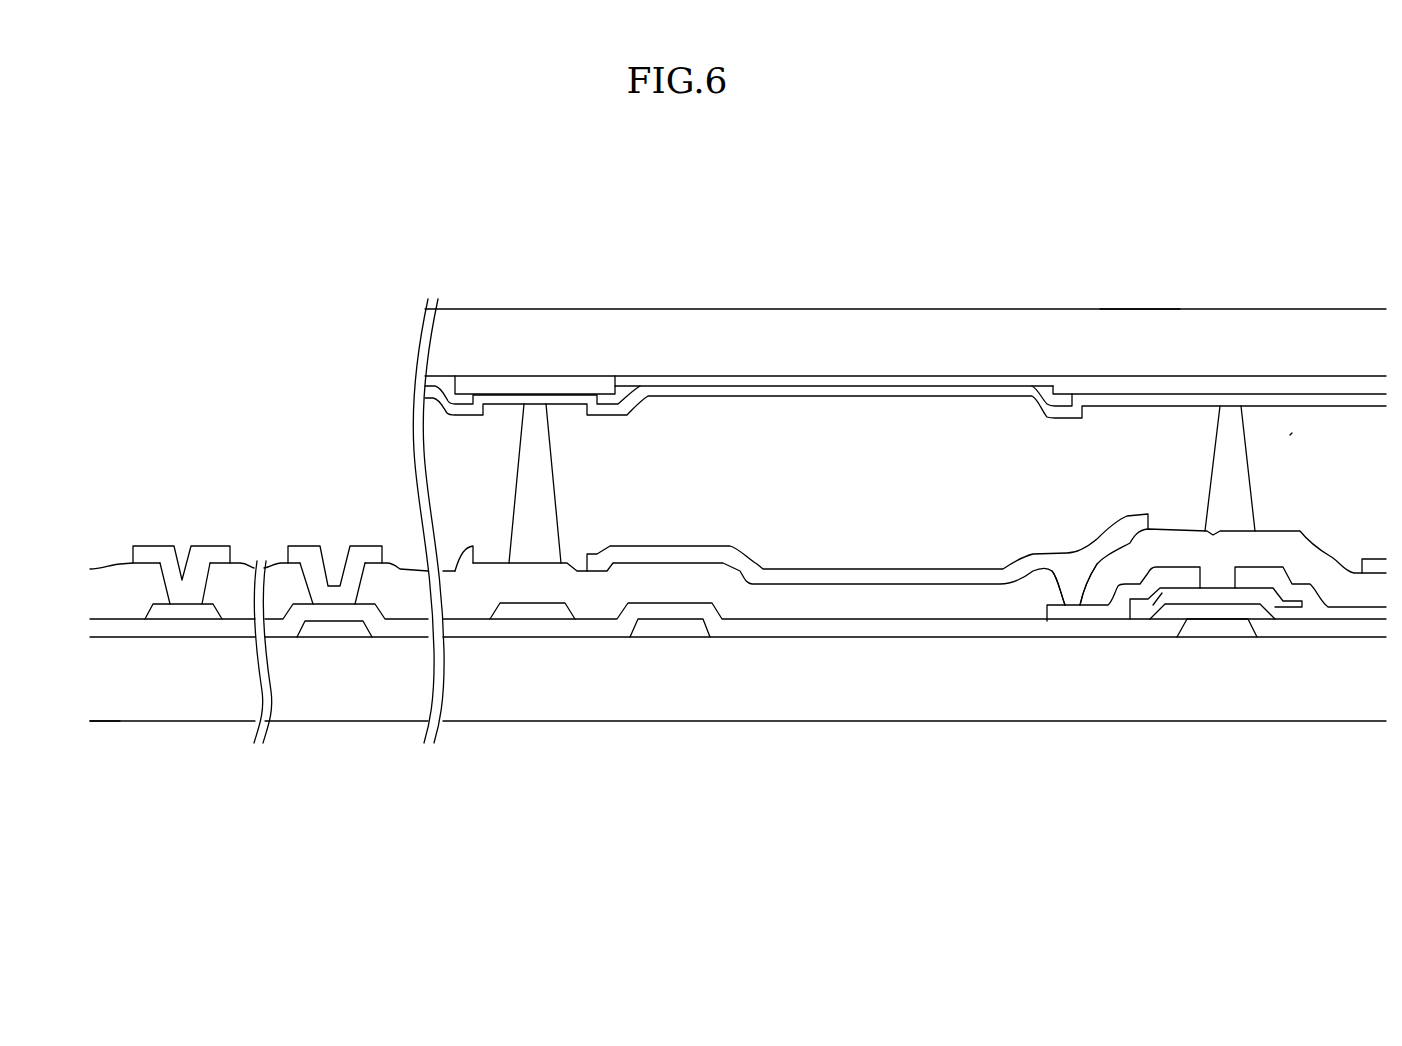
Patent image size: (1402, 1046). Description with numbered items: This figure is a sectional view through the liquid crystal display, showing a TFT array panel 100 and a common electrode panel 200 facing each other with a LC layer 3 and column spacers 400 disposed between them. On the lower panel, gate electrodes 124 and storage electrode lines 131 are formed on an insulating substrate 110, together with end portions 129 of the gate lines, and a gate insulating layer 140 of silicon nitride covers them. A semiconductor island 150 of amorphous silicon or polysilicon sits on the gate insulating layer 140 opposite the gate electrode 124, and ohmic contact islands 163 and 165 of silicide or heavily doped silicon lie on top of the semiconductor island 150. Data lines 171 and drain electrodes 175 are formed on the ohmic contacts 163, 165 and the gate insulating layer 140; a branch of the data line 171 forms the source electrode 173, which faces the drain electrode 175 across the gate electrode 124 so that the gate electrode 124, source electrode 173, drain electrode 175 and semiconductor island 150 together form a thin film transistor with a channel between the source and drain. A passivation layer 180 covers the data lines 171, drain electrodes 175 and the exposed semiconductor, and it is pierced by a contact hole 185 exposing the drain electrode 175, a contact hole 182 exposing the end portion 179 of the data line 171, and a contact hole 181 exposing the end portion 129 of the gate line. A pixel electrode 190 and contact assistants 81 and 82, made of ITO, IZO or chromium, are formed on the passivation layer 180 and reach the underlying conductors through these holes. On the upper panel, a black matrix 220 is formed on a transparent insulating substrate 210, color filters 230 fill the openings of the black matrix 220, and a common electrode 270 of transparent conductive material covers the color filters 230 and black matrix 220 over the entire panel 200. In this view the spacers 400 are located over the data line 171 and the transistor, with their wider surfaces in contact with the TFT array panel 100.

The LC layer 3 is at (1292, 432).
The contact assistant 81 is at (296, 552).
The contact assistant 82 is at (219, 552).
The TFT array panel 100 is at (301, 741).
The insulating substrate 110 is at (963, 706).
The gate electrode 124 is at (1219, 628).
The end portion of gate line 129 is at (334, 630).
The storage electrode line 131 is at (651, 627).
The gate insulating layer 140 is at (584, 627).
The semiconductor island 150 is at (1275, 612).
The ohmic contact island 163 is at (1299, 610).
The ohmic contact island 165 is at (1148, 607).
The data line 171 is at (531, 607).
The source electrode 173 is at (1334, 610).
The drain electrode 175 is at (1113, 607).
The end portion of data line 179 is at (176, 612).
The passivation layer 180 is at (829, 605).
The contact hole 181 is at (337, 552).
The contact hole 182 is at (181, 542).
The contact hole 185 is at (1069, 590).
The pixel electrode 190 is at (455, 557).
The common electrode panel 200 is at (1142, 300).
The insulating substrate 210 is at (912, 322).
The black matrix 220 is at (520, 387).
The color filter 230 is at (1017, 383).
The common electrode 270 is at (794, 393).
The column spacer 400 is at (522, 463).